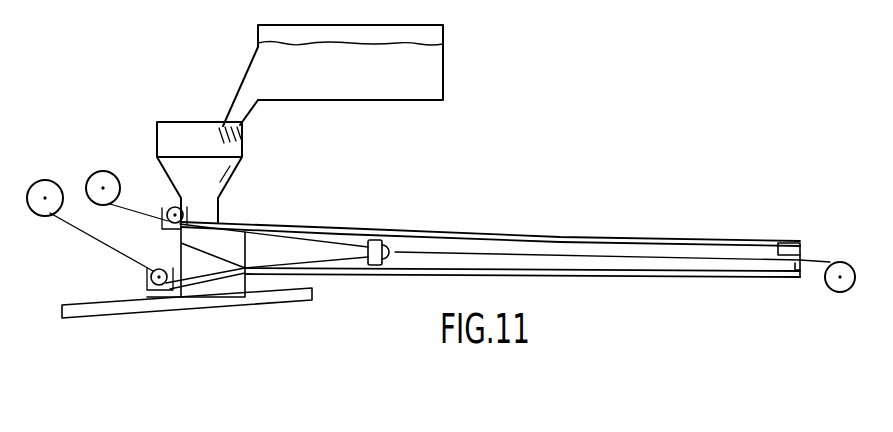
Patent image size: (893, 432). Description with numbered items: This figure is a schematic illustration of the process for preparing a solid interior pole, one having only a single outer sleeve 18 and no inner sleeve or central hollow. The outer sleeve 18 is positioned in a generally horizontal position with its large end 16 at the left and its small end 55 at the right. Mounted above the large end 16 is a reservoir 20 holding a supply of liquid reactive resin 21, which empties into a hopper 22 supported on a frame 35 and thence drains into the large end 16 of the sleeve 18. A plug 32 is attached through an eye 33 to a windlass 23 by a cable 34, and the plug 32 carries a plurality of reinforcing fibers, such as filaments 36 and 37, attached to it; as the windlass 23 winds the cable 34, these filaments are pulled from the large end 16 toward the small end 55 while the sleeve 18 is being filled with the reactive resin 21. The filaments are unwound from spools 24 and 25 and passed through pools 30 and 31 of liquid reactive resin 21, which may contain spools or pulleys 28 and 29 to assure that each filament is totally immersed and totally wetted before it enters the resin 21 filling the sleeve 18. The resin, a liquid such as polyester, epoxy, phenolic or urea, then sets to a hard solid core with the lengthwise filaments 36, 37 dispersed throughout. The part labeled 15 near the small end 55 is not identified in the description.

The conveyor discharge end 15 is at (801, 245).
The large end 16 is at (250, 240).
The outer sleeve 18 is at (626, 237).
The reservoir 20 is at (440, 72).
The liquid reactive resin 21 is at (222, 124).
The hopper 22 is at (240, 158).
The windlass 23 is at (838, 291).
The spool 24 is at (105, 172).
The spool 25 is at (50, 163).
The spool or pulley 28 is at (172, 208).
The spool or pulley 29 is at (158, 268).
The pool of liquid reactive resin 30 is at (162, 216).
The pool of liquid reactive resin 31 is at (147, 279).
The plug 32 is at (378, 240).
The eye 33 is at (394, 250).
The cable 34 is at (556, 254).
The frame 35 is at (312, 297).
The reinforcing filament 36 is at (307, 238).
The reinforcing filament 37 is at (297, 261).
The small end 55 is at (779, 244).